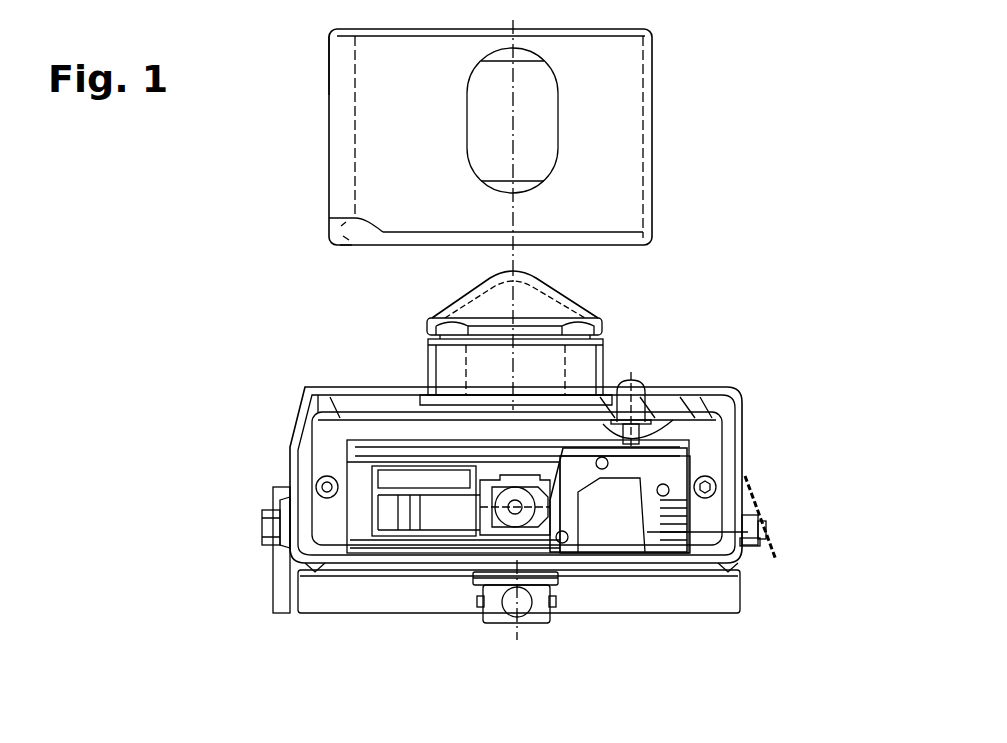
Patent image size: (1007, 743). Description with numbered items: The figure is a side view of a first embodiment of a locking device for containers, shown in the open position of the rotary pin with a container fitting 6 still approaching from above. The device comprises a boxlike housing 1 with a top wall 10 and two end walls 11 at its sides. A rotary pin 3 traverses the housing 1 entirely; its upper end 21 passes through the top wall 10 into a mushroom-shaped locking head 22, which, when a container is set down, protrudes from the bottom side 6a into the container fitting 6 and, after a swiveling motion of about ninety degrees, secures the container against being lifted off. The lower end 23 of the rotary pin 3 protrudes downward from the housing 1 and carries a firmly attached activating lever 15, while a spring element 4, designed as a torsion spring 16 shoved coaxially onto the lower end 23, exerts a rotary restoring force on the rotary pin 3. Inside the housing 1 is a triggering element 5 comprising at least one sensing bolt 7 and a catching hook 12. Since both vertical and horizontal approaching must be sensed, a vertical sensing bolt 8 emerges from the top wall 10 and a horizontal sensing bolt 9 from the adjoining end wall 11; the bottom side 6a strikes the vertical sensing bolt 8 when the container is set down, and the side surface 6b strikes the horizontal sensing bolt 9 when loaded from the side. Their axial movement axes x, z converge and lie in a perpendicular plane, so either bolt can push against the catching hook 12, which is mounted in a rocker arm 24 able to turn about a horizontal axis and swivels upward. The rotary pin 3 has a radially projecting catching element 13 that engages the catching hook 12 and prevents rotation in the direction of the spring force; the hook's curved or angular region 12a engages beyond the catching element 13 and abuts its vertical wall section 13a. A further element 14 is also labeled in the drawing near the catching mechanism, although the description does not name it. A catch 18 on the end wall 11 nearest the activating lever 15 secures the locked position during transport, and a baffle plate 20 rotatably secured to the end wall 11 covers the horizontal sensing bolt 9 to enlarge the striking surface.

The housing 1 is at (200, 406).
The rotary pin 3 is at (598, 298).
The spring element 4 is at (529, 638).
The triggering element 5 is at (630, 544).
The container fitting 6 is at (330, 168).
The bottom side 6a is at (352, 247).
The side surface 6b is at (326, 93).
The sensing bolt 7 is at (719, 383).
The vertical sensing bolt 8 is at (645, 383).
The horizontal sensing bolt 9 is at (750, 548).
The top wall 10 is at (328, 388).
The end wall 11 is at (290, 478).
The catching hook 12 is at (490, 462).
The angular region 12a is at (455, 460).
The catching element 13 is at (498, 522).
The vertical wall section 13a is at (402, 540).
The slider 14 is at (487, 535).
The activating lever 15 is at (487, 612).
The torsion spring 16 is at (585, 580).
The catch 18 is at (273, 598).
The baffle plate 20 is at (772, 560).
The upper end 21 is at (608, 340).
The locking head 22 is at (537, 285).
The lower end 23 is at (517, 625).
The rocker arm 24 is at (652, 502).
The axial movement axis x is at (702, 522).
The axial movement axis z is at (645, 436).